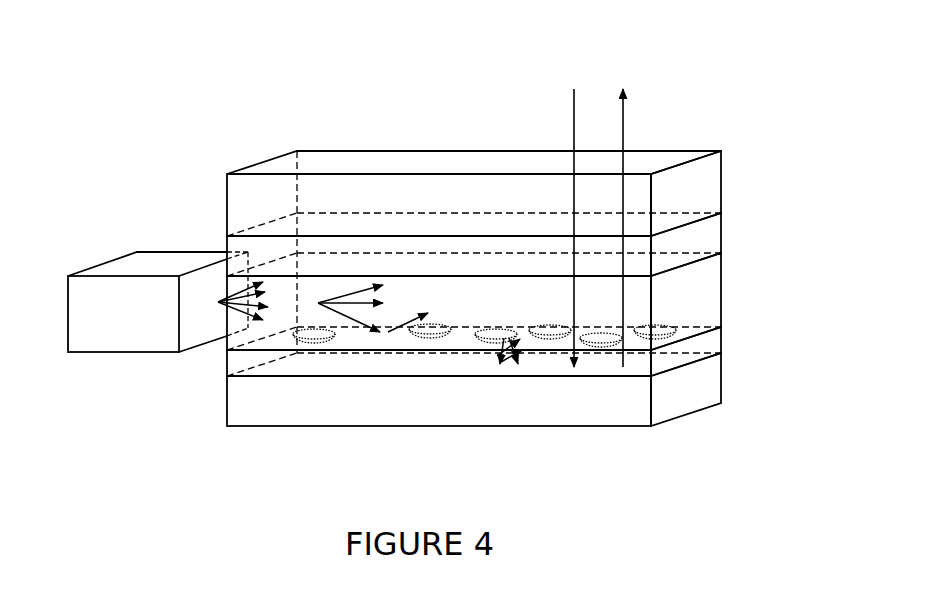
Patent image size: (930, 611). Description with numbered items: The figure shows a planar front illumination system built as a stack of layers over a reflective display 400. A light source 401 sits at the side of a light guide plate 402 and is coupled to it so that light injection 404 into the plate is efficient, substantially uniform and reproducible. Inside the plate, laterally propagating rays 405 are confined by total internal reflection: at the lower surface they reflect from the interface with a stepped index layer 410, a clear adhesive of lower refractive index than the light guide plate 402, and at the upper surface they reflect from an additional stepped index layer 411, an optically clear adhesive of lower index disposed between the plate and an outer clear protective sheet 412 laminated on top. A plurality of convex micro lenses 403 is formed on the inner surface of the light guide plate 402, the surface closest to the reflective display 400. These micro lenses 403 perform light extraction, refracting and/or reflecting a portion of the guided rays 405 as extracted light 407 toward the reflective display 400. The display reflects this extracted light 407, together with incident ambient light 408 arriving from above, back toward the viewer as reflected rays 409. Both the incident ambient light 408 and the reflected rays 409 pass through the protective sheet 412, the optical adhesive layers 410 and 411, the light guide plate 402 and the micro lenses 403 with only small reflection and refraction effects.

The reflective display 400 is at (707, 386).
The light source 401 is at (128, 263).
The light guide plate 402 is at (710, 294).
The convex micro lenses 403 is at (316, 343).
The light injection 404 is at (235, 312).
The laterally propagating rays 405 is at (347, 287).
The extracted light 407 is at (523, 360).
The incident ambient light 408 is at (568, 100).
The reflected rays 409 is at (627, 117).
The stepped index layer 410 is at (707, 340).
The additional stepped index layer 411 is at (705, 236).
The outer clear protective sheet 412 is at (700, 175).